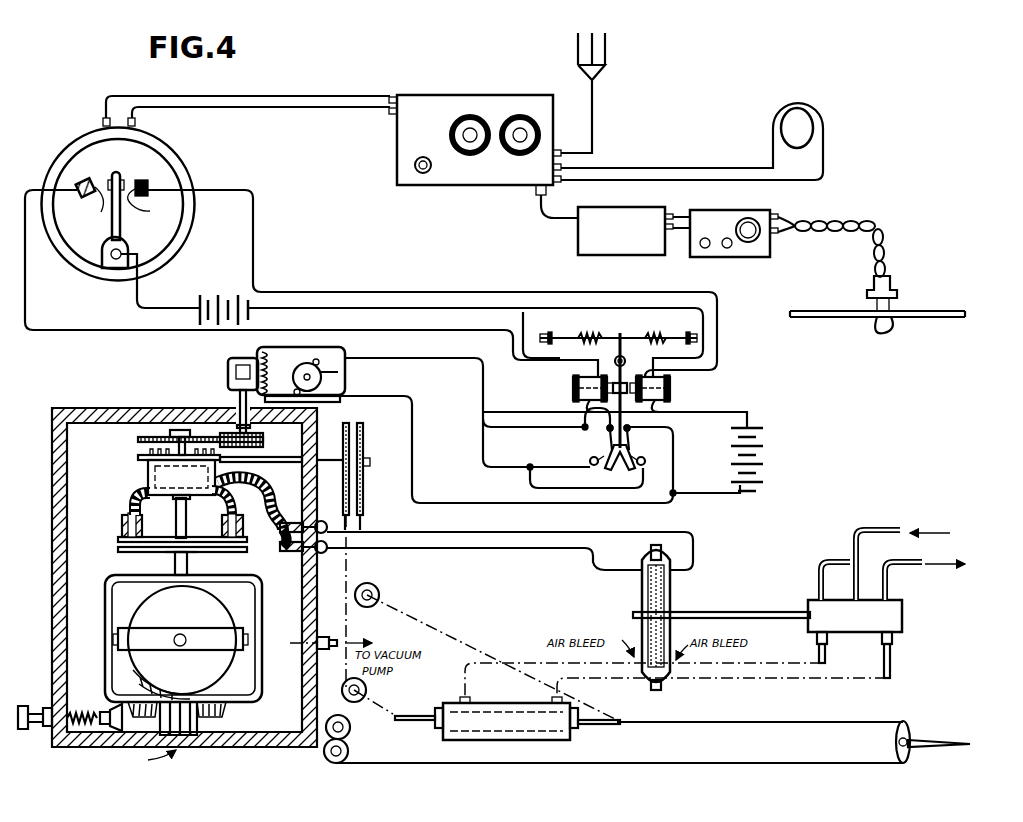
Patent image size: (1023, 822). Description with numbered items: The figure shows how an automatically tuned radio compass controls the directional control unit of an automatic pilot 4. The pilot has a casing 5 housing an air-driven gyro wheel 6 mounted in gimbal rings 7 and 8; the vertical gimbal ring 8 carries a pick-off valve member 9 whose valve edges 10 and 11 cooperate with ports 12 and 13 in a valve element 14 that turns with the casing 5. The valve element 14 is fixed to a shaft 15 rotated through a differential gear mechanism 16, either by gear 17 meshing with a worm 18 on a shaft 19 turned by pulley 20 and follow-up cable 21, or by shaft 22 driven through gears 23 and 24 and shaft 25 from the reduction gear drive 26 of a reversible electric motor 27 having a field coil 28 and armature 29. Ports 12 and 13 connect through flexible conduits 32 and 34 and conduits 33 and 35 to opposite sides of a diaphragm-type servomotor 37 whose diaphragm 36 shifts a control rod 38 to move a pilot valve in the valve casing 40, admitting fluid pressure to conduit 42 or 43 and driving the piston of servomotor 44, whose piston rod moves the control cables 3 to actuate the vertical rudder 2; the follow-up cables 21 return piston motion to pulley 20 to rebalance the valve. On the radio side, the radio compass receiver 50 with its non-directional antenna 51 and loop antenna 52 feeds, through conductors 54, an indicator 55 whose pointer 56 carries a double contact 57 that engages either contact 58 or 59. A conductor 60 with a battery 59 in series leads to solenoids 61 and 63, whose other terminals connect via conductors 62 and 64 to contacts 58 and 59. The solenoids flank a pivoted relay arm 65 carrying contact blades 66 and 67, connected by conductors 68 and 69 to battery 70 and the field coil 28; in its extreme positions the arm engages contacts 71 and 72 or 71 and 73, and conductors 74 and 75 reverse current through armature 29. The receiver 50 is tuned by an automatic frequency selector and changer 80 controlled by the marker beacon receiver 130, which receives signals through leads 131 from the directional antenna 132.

The vertical rudder 2 is at (928, 740).
The control cables 3 is at (804, 722).
The automatic pilot 4 is at (46, 448).
The casing 5 is at (64, 474).
The gyro wheel 6 is at (211, 655).
The gimbal ring 7 is at (229, 628).
The vertical gimbal ring 8 is at (257, 617).
The pick-off valve member 9 is at (205, 554).
The valve edge 10 is at (236, 553).
The valve edge 11 is at (130, 547).
The port 12 is at (244, 539).
The port 13 is at (121, 536).
The valve element 14 is at (168, 512).
The shaft 15 is at (186, 516).
The differential gear mechanism 16 is at (148, 475).
The gear 17 is at (138, 458).
The worm 18 is at (160, 452).
The shaft 19 is at (262, 463).
The pulley 20 is at (364, 441).
The follow-up cable 21 is at (346, 506).
The shaft 22 is at (168, 432).
The gear 23 is at (138, 440).
The gear 24 is at (262, 445).
The shaft 25 is at (240, 404).
The reduction gear drive 26 is at (228, 374).
The reversible electric motor 27 is at (332, 373).
The field coil 28 is at (301, 374).
The armature 29 is at (333, 388).
The flexible conduit 32 is at (276, 560).
The conduit 33 is at (434, 556).
The flexible conduit 34 is at (297, 498).
The conduit 35 is at (440, 532).
The diaphragm 36 is at (641, 588).
The diaphragm-type servomotor 37 is at (672, 585).
The control rod 38 is at (731, 612).
The valve casing 40 is at (900, 611).
The conduit 42 is at (825, 655).
The conduit 43 is at (890, 655).
The servomotor 44 is at (534, 741).
The radio compass receiver 50 is at (458, 94).
The non-directional antenna 51 is at (597, 102).
The directional loop antenna 52 is at (826, 124).
The conductors 54 is at (307, 99).
The indicator 55 is at (188, 176).
The pointer 56 is at (121, 222).
The double contact 57 is at (122, 178).
The contact 58 is at (90, 200).
The contact 59 is at (235, 284).
The conductor 60 is at (160, 300).
The solenoid 61 is at (573, 400).
The conductor 62 is at (478, 337).
The solenoid 63 is at (673, 395).
The conductor 64 is at (483, 292).
The relay arm 65 is at (620, 333).
The contact blade 66 is at (631, 448).
The contact blade 67 is at (612, 442).
The conductor 68 is at (645, 503).
The conductor 69 is at (521, 405).
The battery 70 is at (763, 452).
The contact 71 is at (621, 464).
The contact 72 is at (590, 460).
The contact 73 is at (644, 462).
The conductor 74 is at (497, 466).
The conductor 75 is at (489, 485).
The automatic frequency selector and changer 80 is at (617, 212).
The marker beacon receiver 130 is at (716, 214).
The leads 131 is at (822, 220).
The directional antenna 132 is at (866, 336).